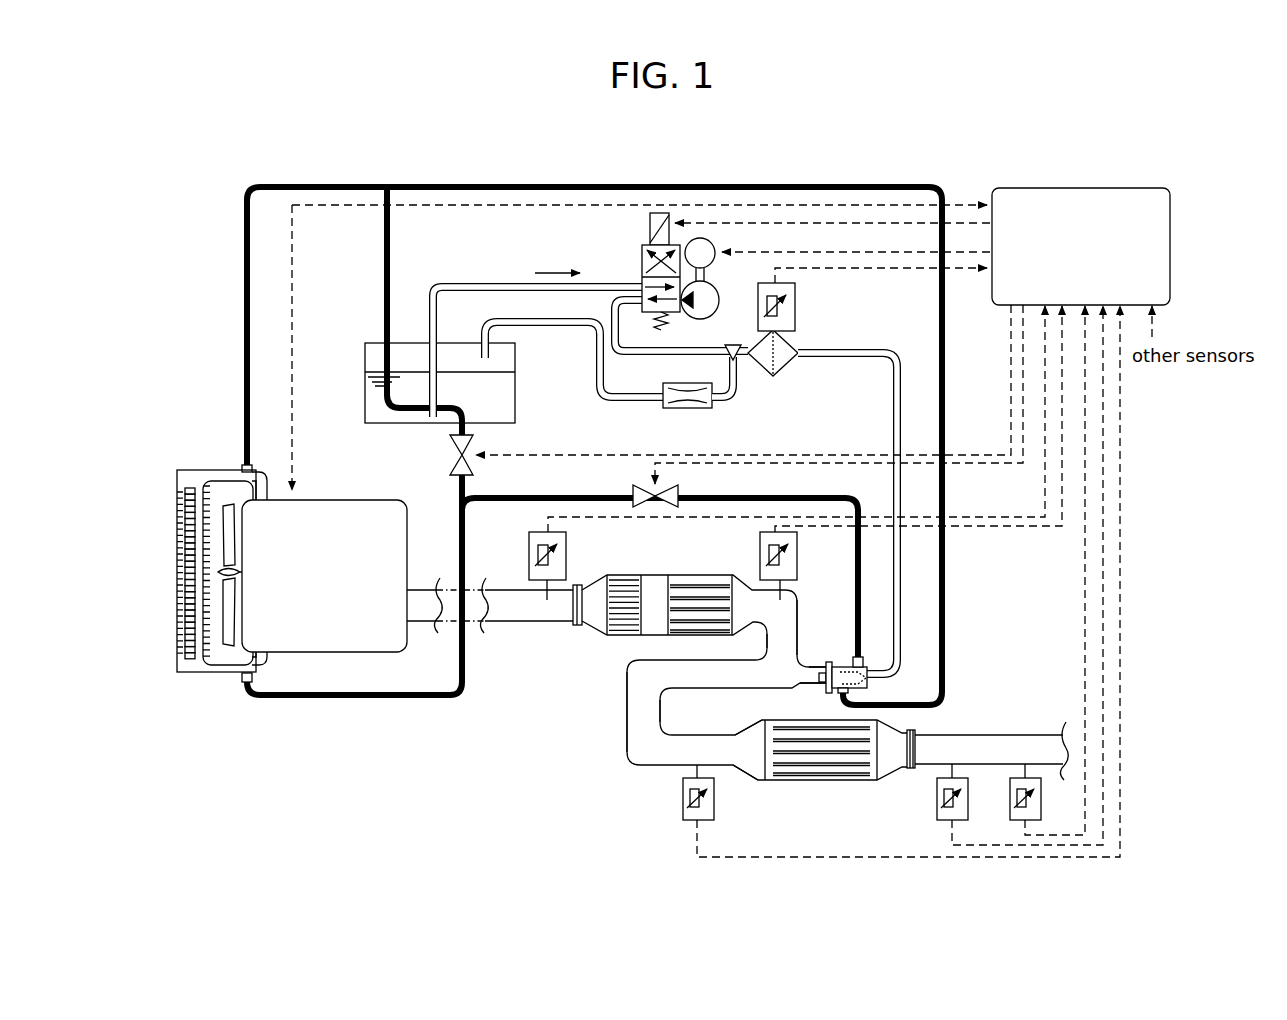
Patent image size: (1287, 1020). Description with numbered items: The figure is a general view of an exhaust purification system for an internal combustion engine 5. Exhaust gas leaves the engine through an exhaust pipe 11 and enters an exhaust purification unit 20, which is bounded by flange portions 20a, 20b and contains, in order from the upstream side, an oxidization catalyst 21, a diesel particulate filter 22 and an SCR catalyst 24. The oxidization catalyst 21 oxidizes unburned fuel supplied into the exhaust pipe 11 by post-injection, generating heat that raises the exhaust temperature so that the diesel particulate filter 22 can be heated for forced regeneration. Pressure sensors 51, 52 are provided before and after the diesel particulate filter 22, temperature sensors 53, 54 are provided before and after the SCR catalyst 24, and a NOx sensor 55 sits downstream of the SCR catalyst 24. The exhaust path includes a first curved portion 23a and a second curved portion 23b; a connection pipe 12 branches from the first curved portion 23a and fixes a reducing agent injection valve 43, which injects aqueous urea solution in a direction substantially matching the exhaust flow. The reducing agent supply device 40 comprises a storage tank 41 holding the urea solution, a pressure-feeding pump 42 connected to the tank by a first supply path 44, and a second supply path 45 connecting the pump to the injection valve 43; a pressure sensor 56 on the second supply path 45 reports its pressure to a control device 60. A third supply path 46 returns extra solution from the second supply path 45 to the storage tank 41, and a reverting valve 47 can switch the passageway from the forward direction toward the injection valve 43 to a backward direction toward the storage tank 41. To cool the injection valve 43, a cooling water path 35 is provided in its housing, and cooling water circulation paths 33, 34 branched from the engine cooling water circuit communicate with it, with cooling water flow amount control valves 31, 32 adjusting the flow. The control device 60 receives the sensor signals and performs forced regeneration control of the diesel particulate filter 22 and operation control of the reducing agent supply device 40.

The internal combustion engine 5 is at (324, 576).
The exhaust pipe 11 is at (513, 622).
The connection pipe 12 is at (808, 664).
The exhaust purification unit 20 is at (536, 690).
The flange portion 20a is at (583, 626).
The flange portion 20b is at (905, 772).
The oxidization catalyst 21 is at (633, 578).
The diesel particulate filter (DPF) 22 is at (699, 578).
The first curved portion 23a is at (812, 612).
The curved portion 23b is at (618, 705).
The SCR catalyst 24 is at (820, 780).
The cooling water flow amount control valve 31 is at (451, 468).
The cooling water flow amount control valve 32 is at (680, 493).
The cooling water circulation path 33 is at (345, 697).
The cooling water circulation path 34 is at (493, 497).
The cooling water path 35 is at (860, 672).
The reducing agent supply device 40 is at (562, 252).
The storage tank 41 is at (515, 385).
The pressure-feeding pump 42 is at (719, 300).
The reducing agent injection valve 43 is at (843, 662).
The first supply path 44 is at (488, 283).
The second supply path 45 is at (893, 403).
The third supply path 46 is at (484, 333).
The reverting valve 47 is at (642, 260).
The pressure sensor 51 is at (529, 552).
The pressure sensor 52 is at (760, 552).
The temperature sensor 53 is at (714, 806).
The temperature sensor 54 is at (968, 806).
The NOx sensor 55 is at (1041, 806).
The pressure sensor 56 is at (797, 320).
The control device 60 is at (1081, 246).